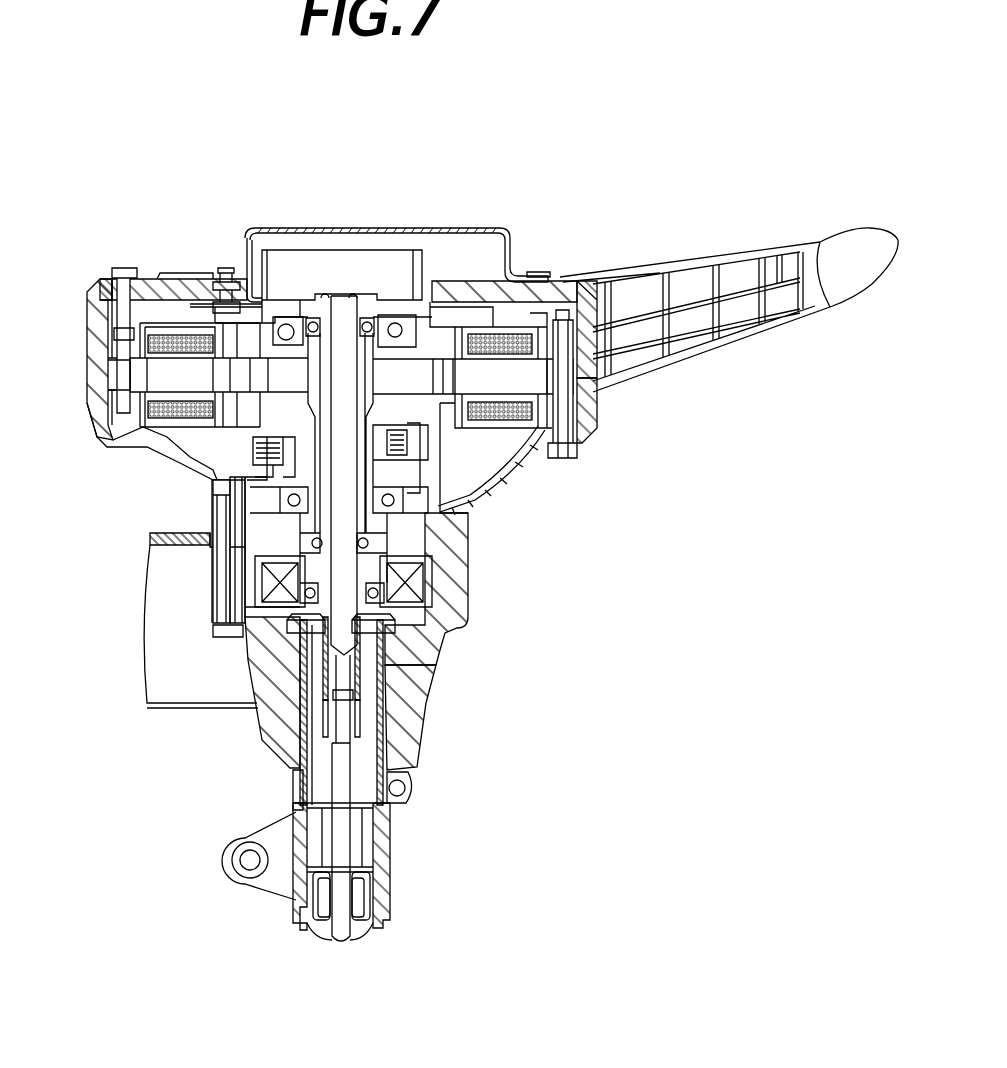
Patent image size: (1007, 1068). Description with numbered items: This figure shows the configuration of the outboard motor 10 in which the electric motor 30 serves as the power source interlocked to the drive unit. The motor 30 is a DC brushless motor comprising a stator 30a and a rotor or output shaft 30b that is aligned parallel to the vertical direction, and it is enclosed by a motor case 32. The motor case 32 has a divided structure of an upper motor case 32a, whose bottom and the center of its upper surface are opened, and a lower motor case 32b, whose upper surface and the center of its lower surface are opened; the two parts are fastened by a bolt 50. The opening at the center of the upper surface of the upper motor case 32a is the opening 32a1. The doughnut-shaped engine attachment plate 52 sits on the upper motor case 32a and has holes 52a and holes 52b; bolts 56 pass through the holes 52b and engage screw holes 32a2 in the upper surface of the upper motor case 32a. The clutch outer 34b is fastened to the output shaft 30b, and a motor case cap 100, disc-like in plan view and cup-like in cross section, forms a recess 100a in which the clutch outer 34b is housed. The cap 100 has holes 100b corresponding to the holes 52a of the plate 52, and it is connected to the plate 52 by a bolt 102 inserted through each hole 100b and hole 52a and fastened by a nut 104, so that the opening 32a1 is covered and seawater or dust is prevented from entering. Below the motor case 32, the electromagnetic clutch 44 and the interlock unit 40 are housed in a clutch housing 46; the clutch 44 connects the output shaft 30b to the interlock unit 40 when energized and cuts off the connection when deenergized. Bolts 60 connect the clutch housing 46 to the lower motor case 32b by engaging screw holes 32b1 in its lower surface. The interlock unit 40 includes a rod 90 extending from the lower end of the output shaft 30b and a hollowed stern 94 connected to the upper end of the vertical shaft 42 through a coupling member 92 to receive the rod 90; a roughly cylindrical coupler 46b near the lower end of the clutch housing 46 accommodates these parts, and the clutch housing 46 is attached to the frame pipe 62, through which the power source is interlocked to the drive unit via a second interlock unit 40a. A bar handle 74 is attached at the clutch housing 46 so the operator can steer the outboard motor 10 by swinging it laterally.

The outboard motor 10 is at (587, 232).
The electric motor 30 is at (657, 492).
The stator 30a is at (503, 387).
The output shaft 30b is at (338, 375).
The motor case 32 is at (715, 368).
The upper motor case 32a is at (590, 357).
The opening 32a1 is at (387, 310).
The screw holes 32a2 is at (110, 313).
The lower motor case 32b is at (593, 393).
The screw holes 32b1 is at (217, 503).
The clutch outer 34b is at (420, 263).
The interlock unit 40 is at (365, 684).
The second interlock unit 40a is at (215, 563).
The vertical shaft 42 is at (333, 787).
The electromagnetic clutch 44 is at (432, 590).
The clutch housing 46 is at (469, 585).
The coupler 46b is at (413, 695).
The bolt 50 is at (563, 417).
The engine attachment plate 52 is at (147, 290).
The holes 52a is at (220, 287).
The holes 52b is at (110, 280).
The bolts 56 is at (123, 270).
The bolts 60 is at (227, 600).
The frame pipe 62 is at (380, 863).
The bar handle 74 is at (188, 710).
The rod 90 is at (323, 707).
The coupling member 92 is at (343, 723).
The hollowed stern 94 is at (318, 733).
The motor case cap 100 is at (338, 227).
The recess 100a is at (497, 227).
The holes 100b is at (213, 277).
The bolt 102 is at (228, 268).
The nut 104 is at (267, 303).